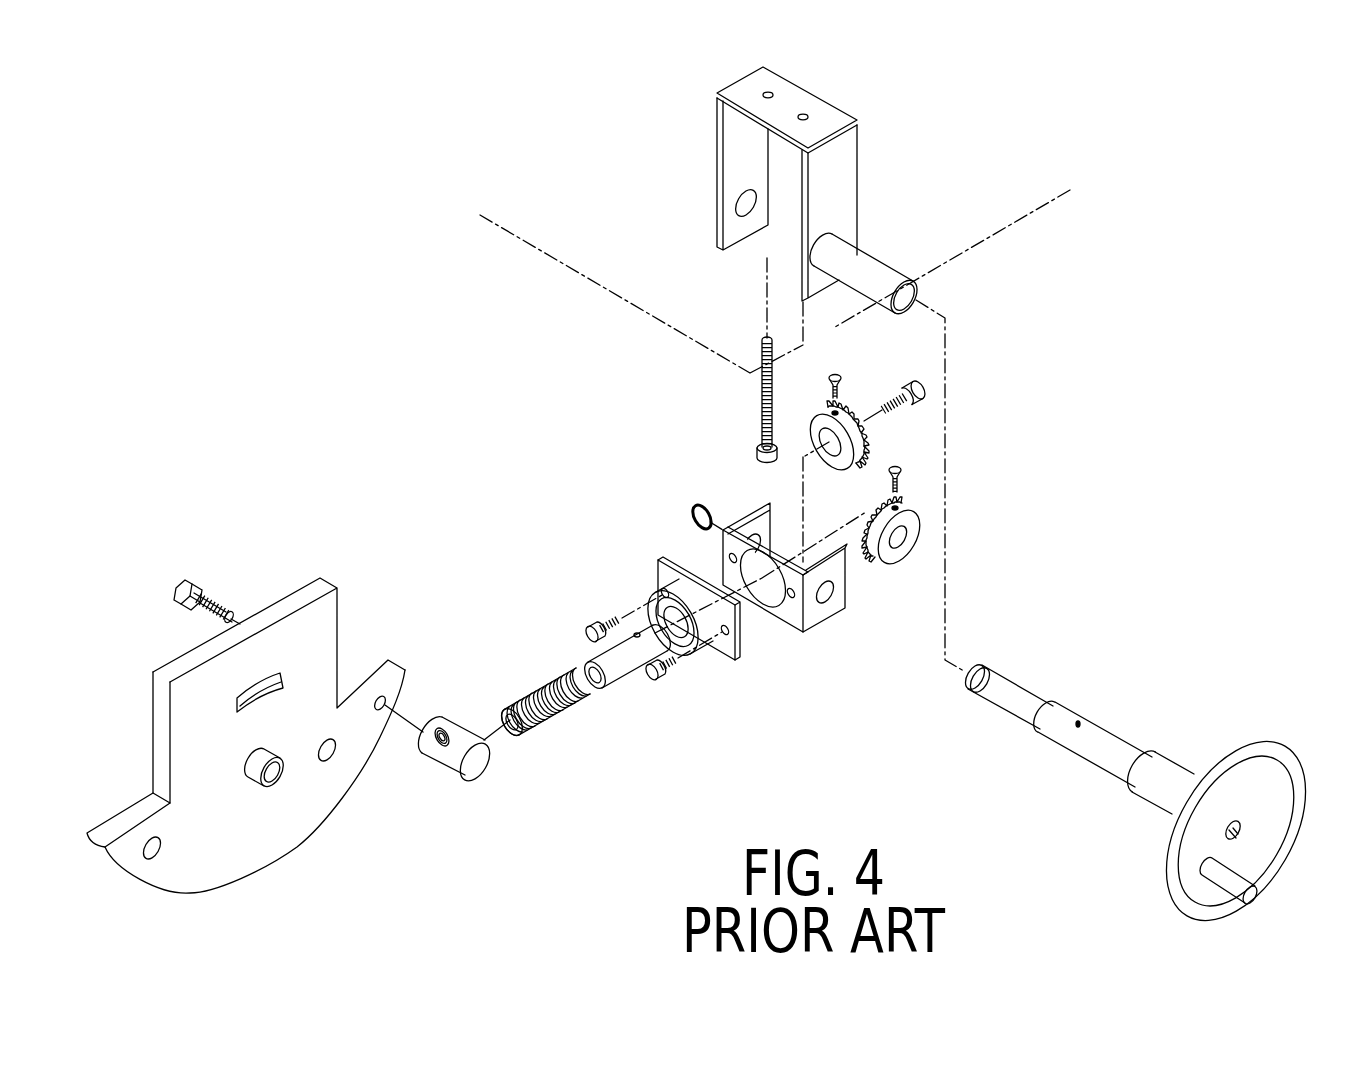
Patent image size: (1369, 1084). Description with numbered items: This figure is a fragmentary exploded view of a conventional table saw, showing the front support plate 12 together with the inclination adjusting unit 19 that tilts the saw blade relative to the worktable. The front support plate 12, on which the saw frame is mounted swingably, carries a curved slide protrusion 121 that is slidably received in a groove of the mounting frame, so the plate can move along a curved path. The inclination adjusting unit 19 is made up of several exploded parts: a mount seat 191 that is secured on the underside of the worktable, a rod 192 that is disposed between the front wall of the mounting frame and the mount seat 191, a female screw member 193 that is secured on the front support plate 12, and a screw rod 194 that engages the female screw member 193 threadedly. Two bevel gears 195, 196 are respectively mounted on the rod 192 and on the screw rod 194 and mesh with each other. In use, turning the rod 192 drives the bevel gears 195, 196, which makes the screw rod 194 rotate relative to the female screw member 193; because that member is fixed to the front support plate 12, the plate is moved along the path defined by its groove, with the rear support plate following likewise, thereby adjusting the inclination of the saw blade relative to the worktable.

The front support plate 12 is at (296, 590).
The curved slide protrusion 121 is at (262, 695).
The inclination adjusting unit 19 is at (1263, 747).
The mount seat 191 is at (838, 115).
The rod 192 is at (1113, 747).
The female screw member 193 is at (477, 765).
The screw rod 194 is at (557, 717).
The bevel gear 195 is at (893, 556).
The bevel gear 196 is at (862, 443).